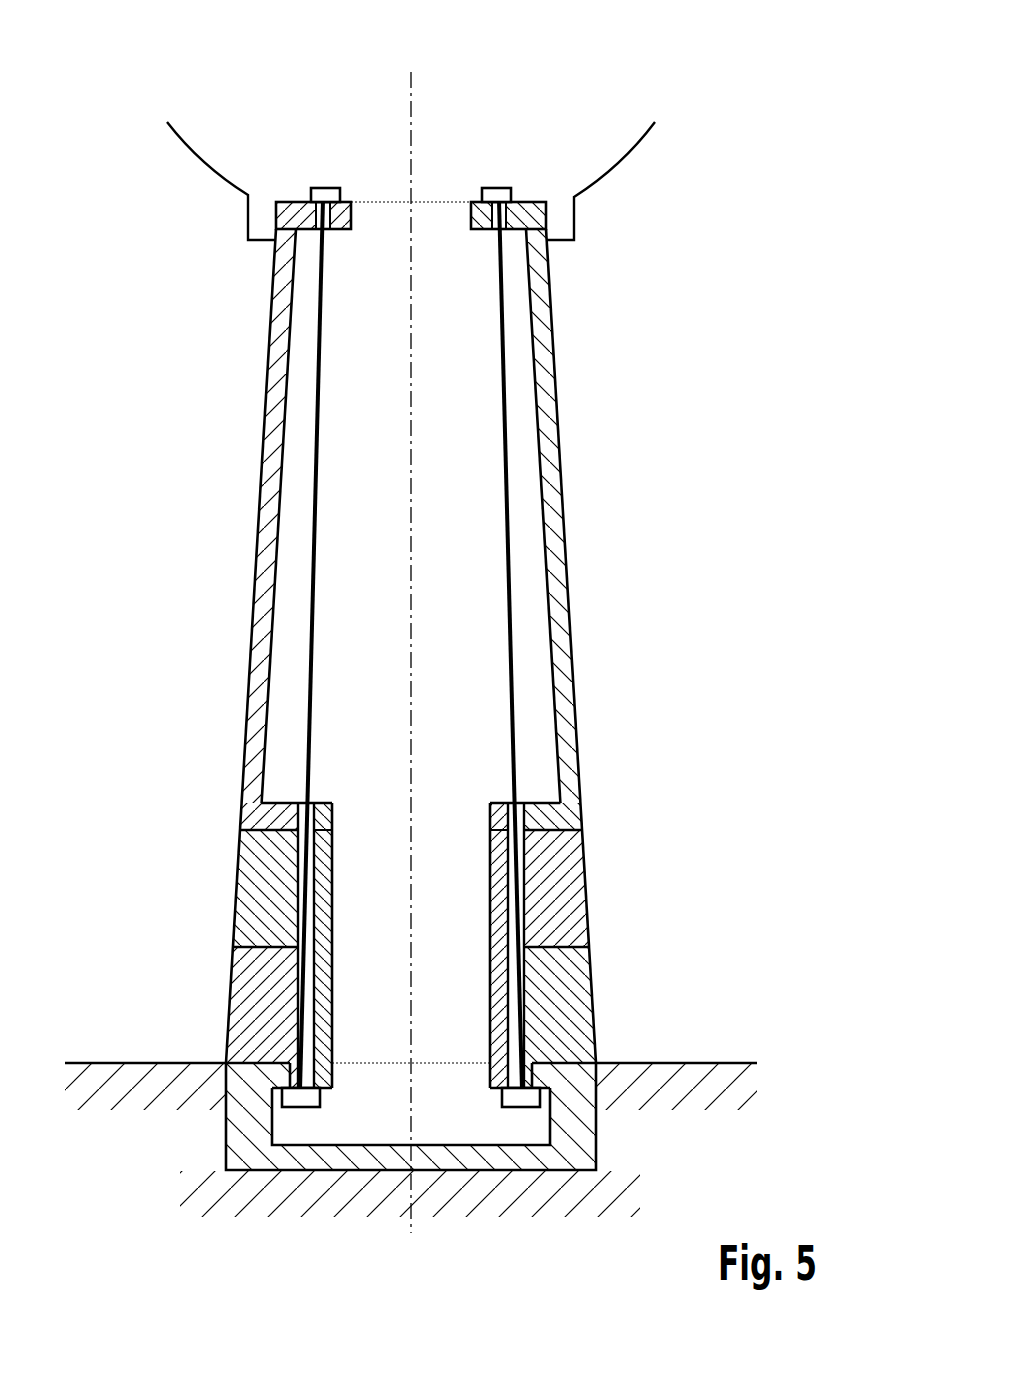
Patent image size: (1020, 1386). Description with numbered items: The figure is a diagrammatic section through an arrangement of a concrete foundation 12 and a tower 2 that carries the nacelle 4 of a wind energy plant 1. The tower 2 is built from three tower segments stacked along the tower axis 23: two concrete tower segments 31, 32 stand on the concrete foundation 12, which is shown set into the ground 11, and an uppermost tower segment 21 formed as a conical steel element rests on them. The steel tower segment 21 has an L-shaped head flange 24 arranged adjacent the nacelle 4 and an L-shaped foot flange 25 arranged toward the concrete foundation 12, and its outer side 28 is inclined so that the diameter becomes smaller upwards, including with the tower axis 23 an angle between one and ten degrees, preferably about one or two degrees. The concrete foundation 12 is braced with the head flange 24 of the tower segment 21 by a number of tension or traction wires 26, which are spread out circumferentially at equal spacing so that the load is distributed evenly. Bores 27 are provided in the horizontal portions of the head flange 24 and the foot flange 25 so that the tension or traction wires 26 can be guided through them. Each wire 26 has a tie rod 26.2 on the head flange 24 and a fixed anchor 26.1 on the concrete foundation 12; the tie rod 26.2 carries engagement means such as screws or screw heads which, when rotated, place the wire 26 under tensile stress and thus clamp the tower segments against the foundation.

The wind energy plant 1 is at (628, 80).
The tower 2 is at (130, 506).
The nacelle 4 is at (647, 138).
The ground 11 is at (715, 1063).
The concrete foundation 12 is at (440, 1158).
The tower segment 21 is at (267, 468).
The tower axis 23 is at (412, 85).
The head flange 24 is at (478, 230).
The foot flange 25 is at (500, 810).
The tension or traction wires 26 is at (501, 358).
The fixed anchor 26.1 is at (297, 1107).
The tie rod 26.2 is at (323, 188).
The bores 27 is at (333, 203).
The outer side 28 is at (560, 437).
The lower tower segment 31 is at (238, 985).
The second tower segment 32 is at (243, 907).